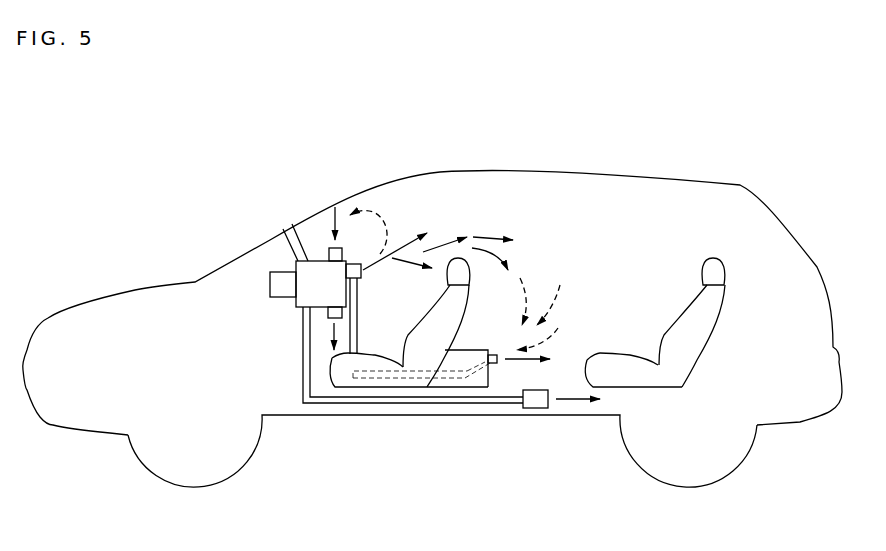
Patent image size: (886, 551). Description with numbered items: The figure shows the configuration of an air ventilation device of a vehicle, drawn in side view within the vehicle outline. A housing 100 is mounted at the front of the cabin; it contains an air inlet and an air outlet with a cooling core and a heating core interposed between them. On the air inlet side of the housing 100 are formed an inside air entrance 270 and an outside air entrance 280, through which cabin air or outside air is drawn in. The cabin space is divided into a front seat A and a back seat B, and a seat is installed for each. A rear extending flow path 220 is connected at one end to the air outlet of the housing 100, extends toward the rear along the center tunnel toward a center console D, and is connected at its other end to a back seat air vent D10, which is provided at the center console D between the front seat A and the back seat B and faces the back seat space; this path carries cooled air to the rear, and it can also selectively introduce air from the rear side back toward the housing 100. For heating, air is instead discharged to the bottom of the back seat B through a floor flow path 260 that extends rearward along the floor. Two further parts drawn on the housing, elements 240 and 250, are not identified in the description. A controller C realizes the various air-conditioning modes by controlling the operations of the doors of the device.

The housing 100 is at (308, 292).
The rear extending flow path 220 is at (357, 294).
The front discharge port 240 is at (357, 264).
The lower discharge port 250 is at (335, 312).
The floor flow path 260 is at (370, 405).
The inside air entrance 270 is at (333, 249).
The outside air entrance 280 is at (292, 253).
The front seat A is at (458, 226).
The back seat B is at (710, 242).
The controller C is at (285, 280).
The center console D is at (463, 358).
The back seat air vent D10 is at (493, 370).